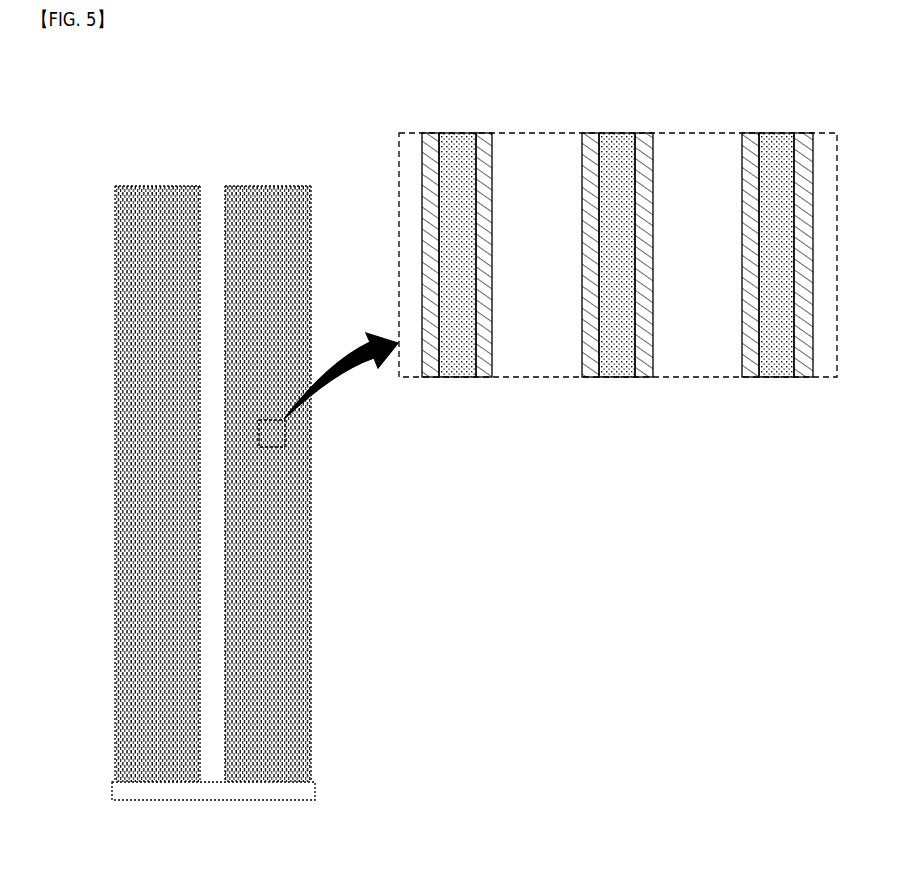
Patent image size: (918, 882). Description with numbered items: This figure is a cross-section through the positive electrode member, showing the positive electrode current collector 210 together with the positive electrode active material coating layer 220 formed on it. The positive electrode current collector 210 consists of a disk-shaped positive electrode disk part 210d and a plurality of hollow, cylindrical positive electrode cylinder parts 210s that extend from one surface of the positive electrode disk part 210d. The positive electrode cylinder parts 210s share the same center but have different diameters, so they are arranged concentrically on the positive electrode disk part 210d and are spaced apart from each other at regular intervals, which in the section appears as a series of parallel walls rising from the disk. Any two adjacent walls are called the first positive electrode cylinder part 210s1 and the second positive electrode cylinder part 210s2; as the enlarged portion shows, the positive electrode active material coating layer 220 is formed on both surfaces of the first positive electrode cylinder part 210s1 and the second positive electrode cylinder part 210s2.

The positive electrode current collector 210 is at (474, 435).
The positive electrode cylinder part 210s is at (476, 426).
The positive electrode disk part 210d is at (304, 792).
The first positive electrode cylinder part 210s1 is at (620, 380).
The second positive electrode cylinder part 210s2 is at (778, 288).
The positive electrode active material coating layer 220 is at (617, 257).